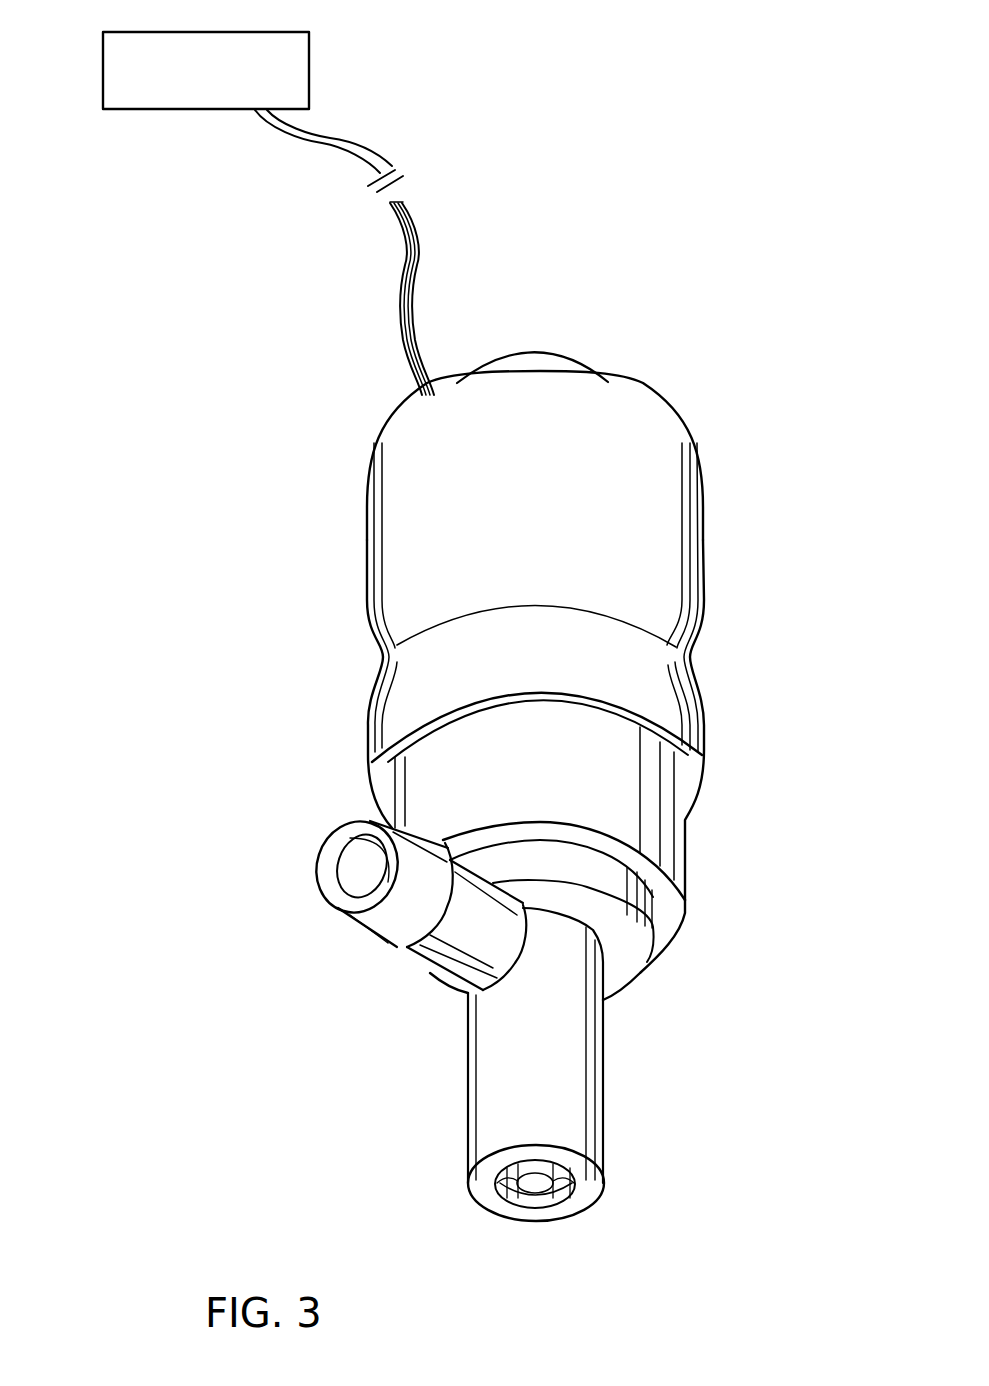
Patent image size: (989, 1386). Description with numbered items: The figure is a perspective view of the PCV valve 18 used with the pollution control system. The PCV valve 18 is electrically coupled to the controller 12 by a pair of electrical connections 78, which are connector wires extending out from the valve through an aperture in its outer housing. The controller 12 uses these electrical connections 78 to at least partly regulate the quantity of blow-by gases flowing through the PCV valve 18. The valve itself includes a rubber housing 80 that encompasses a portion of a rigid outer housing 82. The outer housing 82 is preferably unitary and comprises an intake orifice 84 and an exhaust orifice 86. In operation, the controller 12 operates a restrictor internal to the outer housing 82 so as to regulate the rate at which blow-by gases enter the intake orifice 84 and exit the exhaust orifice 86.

The controller 12 is at (103, 32).
The PCV valve 18 is at (766, 380).
The electrical connections 78 is at (421, 277).
The rubber housing 80 is at (693, 553).
The outer housing 82 is at (680, 840).
The intake orifice 84 is at (550, 1197).
The exhaust orifice 86 is at (353, 862).